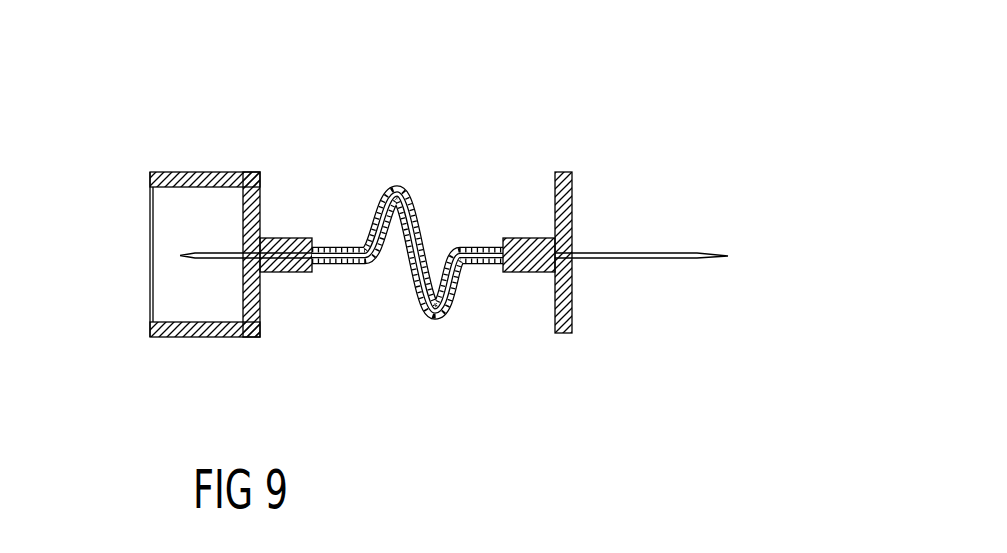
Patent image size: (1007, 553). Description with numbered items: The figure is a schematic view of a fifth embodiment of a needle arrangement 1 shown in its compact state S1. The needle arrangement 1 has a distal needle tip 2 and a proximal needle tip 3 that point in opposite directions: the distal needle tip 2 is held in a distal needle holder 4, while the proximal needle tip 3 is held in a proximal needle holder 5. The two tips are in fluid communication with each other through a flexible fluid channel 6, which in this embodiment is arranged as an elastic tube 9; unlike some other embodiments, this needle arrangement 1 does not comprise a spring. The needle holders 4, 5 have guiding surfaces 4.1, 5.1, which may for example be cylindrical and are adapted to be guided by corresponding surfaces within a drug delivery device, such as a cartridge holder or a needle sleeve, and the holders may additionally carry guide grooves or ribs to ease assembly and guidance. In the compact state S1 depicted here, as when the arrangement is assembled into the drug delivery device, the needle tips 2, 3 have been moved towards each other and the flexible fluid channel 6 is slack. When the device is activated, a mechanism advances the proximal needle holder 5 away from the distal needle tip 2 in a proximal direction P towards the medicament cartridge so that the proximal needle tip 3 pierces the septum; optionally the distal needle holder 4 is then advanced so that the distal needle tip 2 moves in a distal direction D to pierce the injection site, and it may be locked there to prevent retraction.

The needle arrangement 1 is at (220, 111).
The compact state S1 is at (149, 149).
The distal needle tip 2 is at (697, 252).
The proximal needle tip 3 is at (195, 255).
The distal needle holder 4 is at (565, 275).
The guiding surface 4.1 is at (562, 170).
The proximal needle holder 5 is at (250, 297).
The guiding surface 5.1 is at (237, 172).
The flexible fluid channel 6 is at (407, 299).
The elastic tube 9 is at (418, 298).
The proximal direction P is at (94, 261).
The distal direction D is at (762, 258).